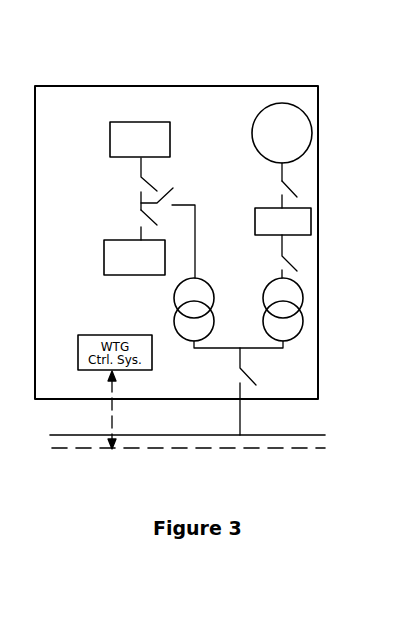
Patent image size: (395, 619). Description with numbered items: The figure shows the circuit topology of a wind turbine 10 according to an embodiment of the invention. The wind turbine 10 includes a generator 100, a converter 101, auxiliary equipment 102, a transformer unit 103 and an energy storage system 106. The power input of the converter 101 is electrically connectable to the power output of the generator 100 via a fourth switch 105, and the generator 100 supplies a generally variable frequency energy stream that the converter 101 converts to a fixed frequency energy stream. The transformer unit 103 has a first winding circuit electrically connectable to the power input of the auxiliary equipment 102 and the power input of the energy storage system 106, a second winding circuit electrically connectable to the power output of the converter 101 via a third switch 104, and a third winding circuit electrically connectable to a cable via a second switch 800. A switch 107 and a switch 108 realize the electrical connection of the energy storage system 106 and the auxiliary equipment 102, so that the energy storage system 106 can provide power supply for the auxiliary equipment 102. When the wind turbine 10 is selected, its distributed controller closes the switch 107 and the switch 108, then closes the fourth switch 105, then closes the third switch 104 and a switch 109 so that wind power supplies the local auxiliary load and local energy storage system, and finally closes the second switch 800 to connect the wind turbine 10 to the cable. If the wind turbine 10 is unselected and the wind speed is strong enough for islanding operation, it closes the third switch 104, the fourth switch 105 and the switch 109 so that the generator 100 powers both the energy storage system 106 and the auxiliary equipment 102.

The wind turbine 10 is at (134, 87).
The generator 100 is at (262, 132).
The converter 101 is at (258, 222).
The auxiliary equipment 102 is at (108, 258).
The transformer unit 103 is at (284, 298).
The third switch 104 is at (276, 262).
The fourth switch 105 is at (276, 190).
The energy storage system 106 is at (110, 139).
The switch 107 is at (140, 187).
The switch 108 is at (142, 220).
The switch 109 is at (162, 194).
The second switch 800 is at (234, 379).